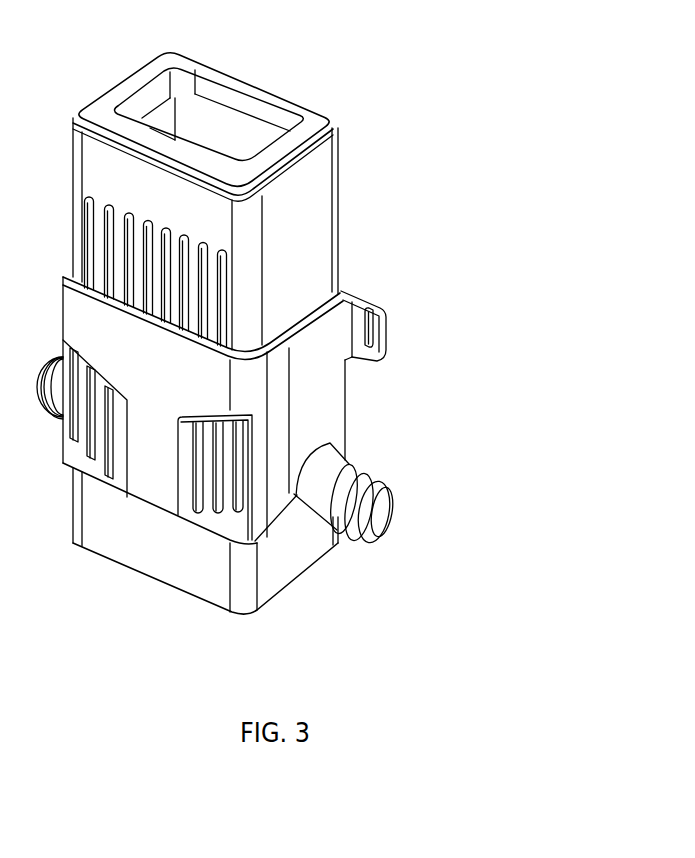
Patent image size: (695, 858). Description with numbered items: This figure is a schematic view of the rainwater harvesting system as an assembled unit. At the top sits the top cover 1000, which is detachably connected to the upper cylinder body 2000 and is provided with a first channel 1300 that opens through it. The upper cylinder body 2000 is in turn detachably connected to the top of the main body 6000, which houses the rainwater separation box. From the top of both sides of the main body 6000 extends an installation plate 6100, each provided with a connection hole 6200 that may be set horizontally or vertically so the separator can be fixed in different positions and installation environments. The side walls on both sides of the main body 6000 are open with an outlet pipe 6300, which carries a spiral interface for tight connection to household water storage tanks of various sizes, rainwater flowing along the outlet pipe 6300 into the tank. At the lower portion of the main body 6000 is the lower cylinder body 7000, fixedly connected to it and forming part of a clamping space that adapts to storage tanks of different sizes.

The top cover 1000 is at (318, 125).
The first channel 1300 is at (210, 118).
The upper cylinder body 2000 is at (303, 240).
The main body 6000 is at (328, 418).
The installation plate 6100 is at (382, 307).
The connection hole 6200 is at (388, 333).
The outlet pipe 6300 is at (337, 467).
The lower cylinder body 7000 is at (282, 553).